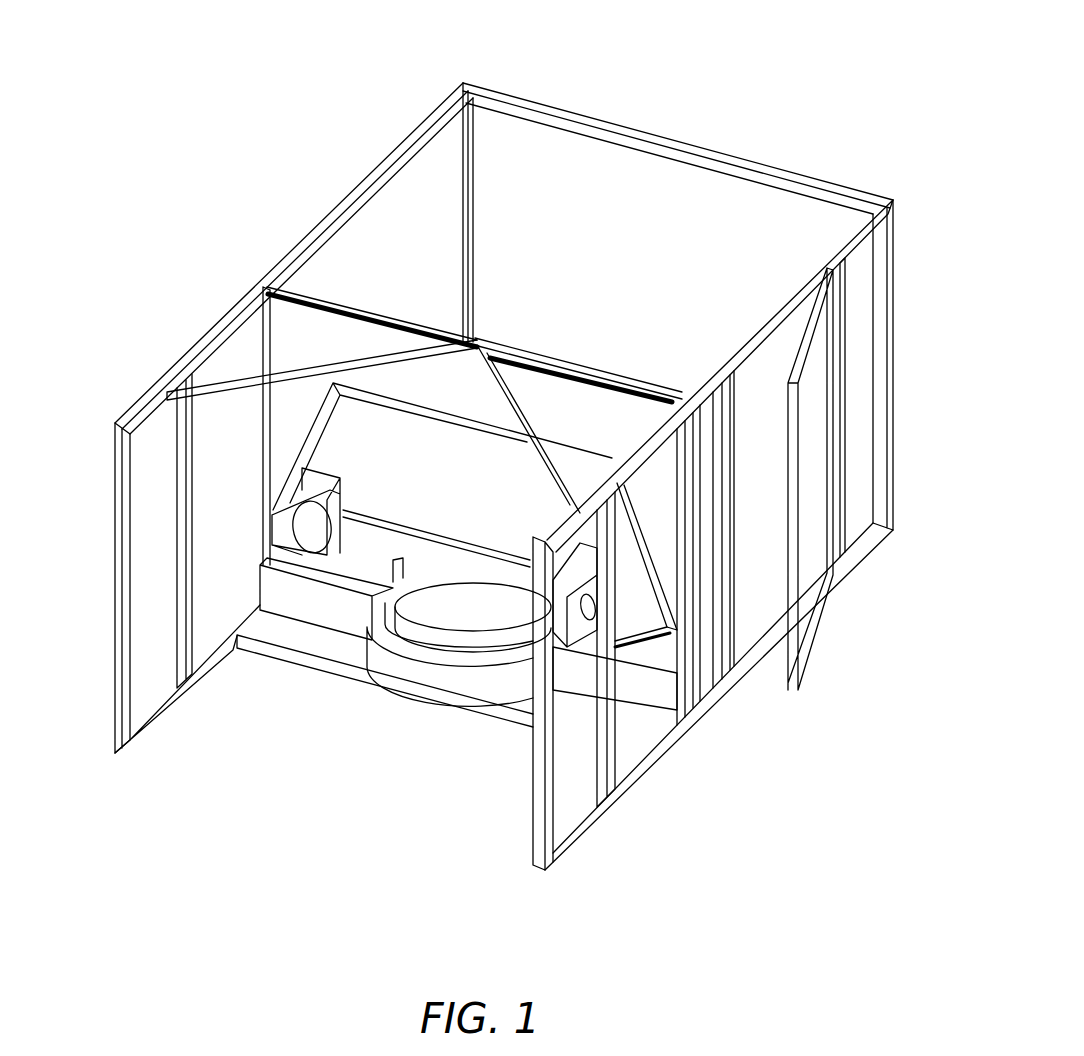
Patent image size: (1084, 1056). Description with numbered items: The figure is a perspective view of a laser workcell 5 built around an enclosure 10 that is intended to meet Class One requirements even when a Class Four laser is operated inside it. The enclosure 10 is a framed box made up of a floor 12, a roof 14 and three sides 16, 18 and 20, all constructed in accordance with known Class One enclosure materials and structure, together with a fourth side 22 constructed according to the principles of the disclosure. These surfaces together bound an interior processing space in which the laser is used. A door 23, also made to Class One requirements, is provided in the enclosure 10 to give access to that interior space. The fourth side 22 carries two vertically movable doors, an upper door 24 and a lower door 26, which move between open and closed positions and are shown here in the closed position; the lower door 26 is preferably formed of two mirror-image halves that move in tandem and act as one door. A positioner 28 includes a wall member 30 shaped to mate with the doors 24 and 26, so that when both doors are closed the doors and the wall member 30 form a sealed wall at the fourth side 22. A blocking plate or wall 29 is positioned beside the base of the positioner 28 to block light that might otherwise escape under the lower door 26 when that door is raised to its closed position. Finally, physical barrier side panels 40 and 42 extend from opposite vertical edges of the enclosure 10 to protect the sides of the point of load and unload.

The workcell 5 is at (291, 180).
The enclosure 10 is at (810, 185).
The floor 12 is at (745, 612).
The roof 14 is at (545, 135).
The side 16 is at (387, 213).
The side 18 is at (713, 192).
The side 20 is at (862, 268).
The fourth side 22 is at (290, 333).
The door 23 is at (812, 642).
The upper door 24 is at (582, 421).
The lower door 26 is at (660, 650).
The positioner 28 is at (440, 624).
The blocking plate or wall 29 is at (322, 602).
The wall member 30 is at (467, 488).
The physical barrier side panel 40 is at (138, 618).
The physical barrier side panel 42 is at (533, 805).